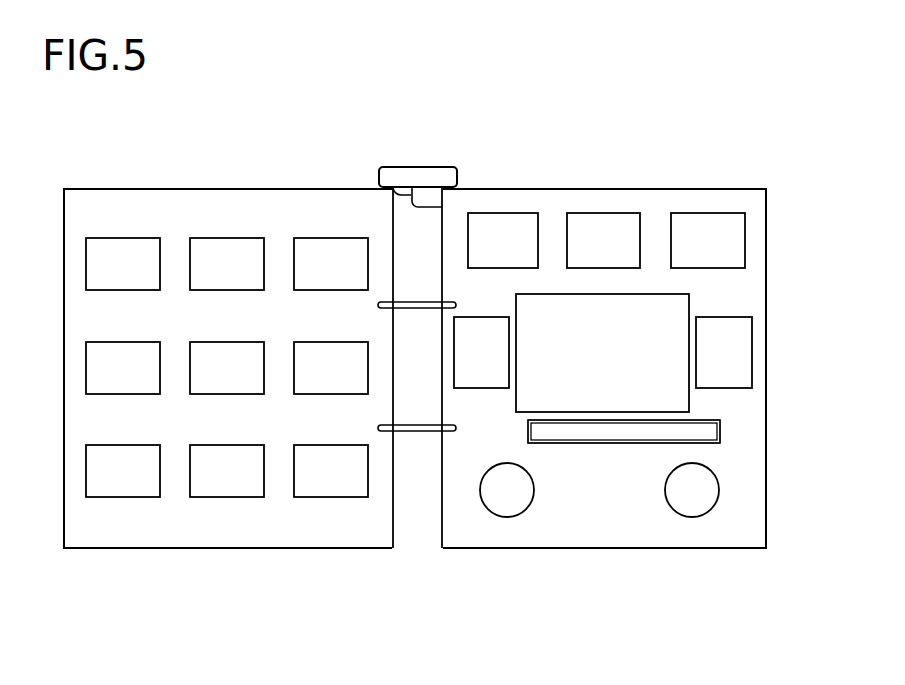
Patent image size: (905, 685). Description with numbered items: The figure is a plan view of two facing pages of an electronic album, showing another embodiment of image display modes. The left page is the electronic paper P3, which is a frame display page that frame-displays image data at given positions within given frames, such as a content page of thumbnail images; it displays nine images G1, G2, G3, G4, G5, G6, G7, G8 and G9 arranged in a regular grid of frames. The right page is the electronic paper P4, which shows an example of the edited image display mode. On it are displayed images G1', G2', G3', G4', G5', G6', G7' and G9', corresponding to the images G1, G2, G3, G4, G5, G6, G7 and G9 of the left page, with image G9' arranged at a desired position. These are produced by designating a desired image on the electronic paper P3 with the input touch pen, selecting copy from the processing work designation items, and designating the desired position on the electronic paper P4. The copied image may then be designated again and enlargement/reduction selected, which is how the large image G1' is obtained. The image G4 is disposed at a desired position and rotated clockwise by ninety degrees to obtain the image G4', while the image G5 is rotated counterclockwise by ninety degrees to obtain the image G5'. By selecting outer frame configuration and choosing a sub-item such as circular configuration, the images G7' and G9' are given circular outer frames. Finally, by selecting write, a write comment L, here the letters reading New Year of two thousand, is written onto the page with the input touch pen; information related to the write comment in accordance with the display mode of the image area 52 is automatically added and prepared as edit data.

The image G1 is at (123, 217).
The image G2 is at (227, 217).
The image G3 is at (331, 217).
The image G4 is at (88, 368).
The image G5 is at (140, 343).
The image G6 is at (192, 386).
The image G7 is at (123, 519).
The image G8 is at (227, 498).
The image G9 is at (331, 519).
The enlarged image G1' is at (667, 359).
The image G2' is at (503, 206).
The image G3' is at (603, 206).
The rotated image G4' is at (451, 352).
The rotated image G5' is at (757, 333).
The image G6' is at (708, 206).
The circular-frame image G7' is at (496, 529).
The circular-frame image G9' is at (710, 526).
The image area 52 is at (598, 445).
The write comment L is at (720, 432).
The electronic paper P3 is at (180, 548).
The electronic paper P4 is at (565, 548).